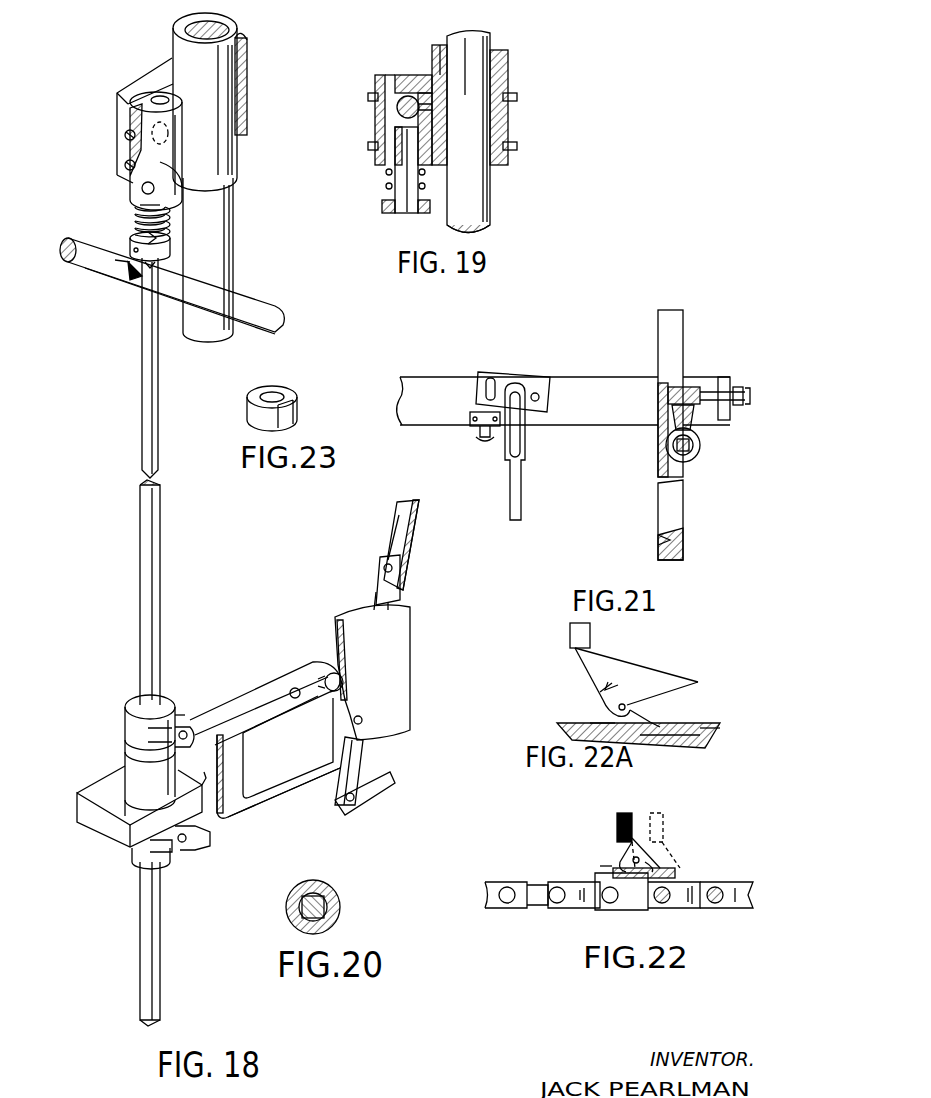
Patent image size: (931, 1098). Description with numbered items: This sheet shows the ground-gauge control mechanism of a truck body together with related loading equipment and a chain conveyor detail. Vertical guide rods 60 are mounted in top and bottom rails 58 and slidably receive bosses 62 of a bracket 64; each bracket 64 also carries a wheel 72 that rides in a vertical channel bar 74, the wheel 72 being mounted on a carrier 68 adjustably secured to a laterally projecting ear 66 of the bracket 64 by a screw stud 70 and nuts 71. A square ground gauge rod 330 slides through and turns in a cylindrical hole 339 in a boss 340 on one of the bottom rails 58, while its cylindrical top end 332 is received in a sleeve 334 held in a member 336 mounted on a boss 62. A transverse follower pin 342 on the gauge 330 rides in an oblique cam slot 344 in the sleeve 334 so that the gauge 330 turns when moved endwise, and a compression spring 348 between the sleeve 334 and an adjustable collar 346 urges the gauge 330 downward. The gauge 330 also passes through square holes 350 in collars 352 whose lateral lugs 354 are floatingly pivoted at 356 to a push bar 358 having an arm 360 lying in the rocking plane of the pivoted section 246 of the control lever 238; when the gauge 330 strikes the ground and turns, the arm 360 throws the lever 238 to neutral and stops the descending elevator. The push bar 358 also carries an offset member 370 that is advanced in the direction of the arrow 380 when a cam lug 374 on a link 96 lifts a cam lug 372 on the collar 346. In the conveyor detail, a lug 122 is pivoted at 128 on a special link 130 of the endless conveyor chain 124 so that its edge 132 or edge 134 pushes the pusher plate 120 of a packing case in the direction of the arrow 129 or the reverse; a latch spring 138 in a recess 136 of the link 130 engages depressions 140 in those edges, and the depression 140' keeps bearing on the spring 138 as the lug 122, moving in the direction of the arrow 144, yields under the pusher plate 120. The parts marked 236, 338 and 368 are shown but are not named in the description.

In FIG. 18, the bottom rail 58 is at (128, 845).
In FIG. 18, the vertical guide rod 60 is at (214, 194).
In FIG. 19, the vertical guide rod 60 is at (478, 196).
In FIG. 18, the boss 62 is at (223, 150).
In FIG. 19, the boss 62 is at (500, 62).
In FIG. 21, the bracket 64 is at (590, 392).
In FIG. 21, the laterally projecting ear 66 is at (726, 418).
In FIG. 21, the carrier 68 is at (700, 455).
In FIG. 21, the screw stud 70 is at (700, 388).
In FIG. 21, the nuts 71 is at (742, 387).
In FIG. 21, the wheel 72 is at (690, 465).
In FIG. 21, the vertical channel bar 74 is at (686, 548).
In FIG. 18, the link 96 is at (255, 302).
In FIG. 22A, the pusher plate 120 is at (592, 640).
In FIG. 22, the pusher plate 120 is at (628, 813).
In FIG. 22A, the lug 122 is at (640, 672).
In FIG. 22, the lug 122 is at (640, 835).
In FIG. 22, the endless conveyor chain 124 is at (520, 882).
In FIG. 22A, the pivot 128 is at (625, 704).
In FIG. 22, the pivot 128 is at (632, 857).
In FIG. 22, the arrow 129 is at (615, 822).
In FIG. 22A, the special link 130 is at (695, 735).
In FIG. 22, the special link 130 is at (630, 902).
In FIG. 22A, the edge of lug 132 is at (585, 680).
In FIG. 22, the edge of lug 132 is at (625, 855).
In FIG. 22A, the edge of lug 134 is at (700, 690).
In FIG. 22, the edge of lug 134 is at (665, 846).
In FIG. 22A, the recess 136 is at (700, 745).
In FIG. 22, the recess 136 is at (678, 875).
In FIG. 22A, the latch spring 138 is at (600, 722).
In FIG. 22, the latch spring 138 is at (612, 868).
In FIG. 22A, the depression 140 is at (579, 697).
In FIG. 22, the depression 140 is at (640, 852).
In FIG. 22A, the depression 140' is at (682, 708).
In FIG. 22A, the arrow 144 is at (665, 740).
In FIG. 18, the lever 236 is at (400, 685).
In FIG. 18, the control lever 238 is at (372, 778).
In FIG. 18, the pivoted section 246 is at (355, 764).
In FIG. 18, the ground gauge 330 is at (140, 388).
In FIG. 18, the cylindrical top end 332 is at (168, 220).
In FIG. 18, the sleeve 334 is at (128, 186).
In FIG. 19, the sleeve 334 is at (378, 108).
In FIG. 18, the member 336 is at (147, 70).
In FIG. 19, the member 336 is at (395, 75).
In FIG. 19, the shaft 338 is at (400, 155).
In FIG. 20, the cylindrical hole 339 is at (295, 918).
In FIG. 18, the boss 340 is at (130, 800).
In FIG. 20, the boss 340 is at (335, 900).
In FIG. 18, the follower pin 342 is at (165, 200).
In FIG. 19, the follower pin 342 is at (432, 75).
In FIG. 18, the cam slot 344 is at (141, 190).
In FIG. 19, the cam slot 344 is at (400, 130).
In FIG. 18, the collar 346 is at (172, 252).
In FIG. 19, the collar 346 is at (422, 214).
In FIG. 23, the collar 346 is at (290, 392).
In FIG. 18, the compression spring 348 is at (137, 218).
In FIG. 18, the square hole 350 is at (176, 705).
In FIG. 18, the collar 352 is at (128, 685).
In FIG. 18, the lateral lug 354 is at (150, 735).
In FIG. 18, the pivotal connection 356 is at (190, 722).
In FIG. 18, the push bar 358 is at (244, 747).
In FIG. 18, the arm 360 is at (280, 790).
In FIG. 18, the direction arrow 368 is at (290, 818).
In FIG. 18, the offset member 370 is at (308, 662).
In FIG. 18, the cam lug 372 is at (132, 226).
In FIG. 23, the cam lug 372 is at (270, 420).
In FIG. 18, the cam lug 374 is at (125, 270).
In FIG. 18, the arrow 380 is at (262, 678).